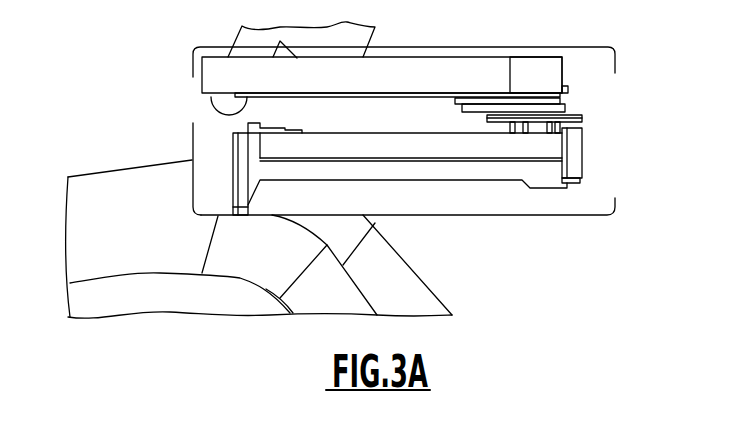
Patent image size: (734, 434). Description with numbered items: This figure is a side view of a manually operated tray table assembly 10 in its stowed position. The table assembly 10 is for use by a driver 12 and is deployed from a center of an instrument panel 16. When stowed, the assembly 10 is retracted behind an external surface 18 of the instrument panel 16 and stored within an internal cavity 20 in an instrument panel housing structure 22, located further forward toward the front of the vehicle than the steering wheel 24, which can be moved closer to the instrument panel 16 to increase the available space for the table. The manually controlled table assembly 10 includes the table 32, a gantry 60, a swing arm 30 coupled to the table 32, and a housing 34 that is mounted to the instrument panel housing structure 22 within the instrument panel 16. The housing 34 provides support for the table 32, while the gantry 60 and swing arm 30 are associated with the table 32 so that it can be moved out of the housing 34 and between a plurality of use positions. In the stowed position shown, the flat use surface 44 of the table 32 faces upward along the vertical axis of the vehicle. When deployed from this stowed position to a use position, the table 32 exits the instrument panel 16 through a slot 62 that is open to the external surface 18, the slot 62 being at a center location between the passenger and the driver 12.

The tray table assembly 10 is at (399, 72).
The driver 12 is at (93, 223).
The instrument panel 16 is at (401, 197).
The external surface 18 is at (192, 147).
The internal cavity 20 is at (372, 197).
The instrument panel housing structure 22 is at (573, 165).
The steering wheel 24 is at (243, 37).
The swing arm 30 is at (565, 95).
The table 32 is at (538, 81).
The housing 34 is at (453, 170).
The flat use surface 44 is at (430, 57).
The gantry 60 is at (460, 105).
The slot 62 is at (187, 105).